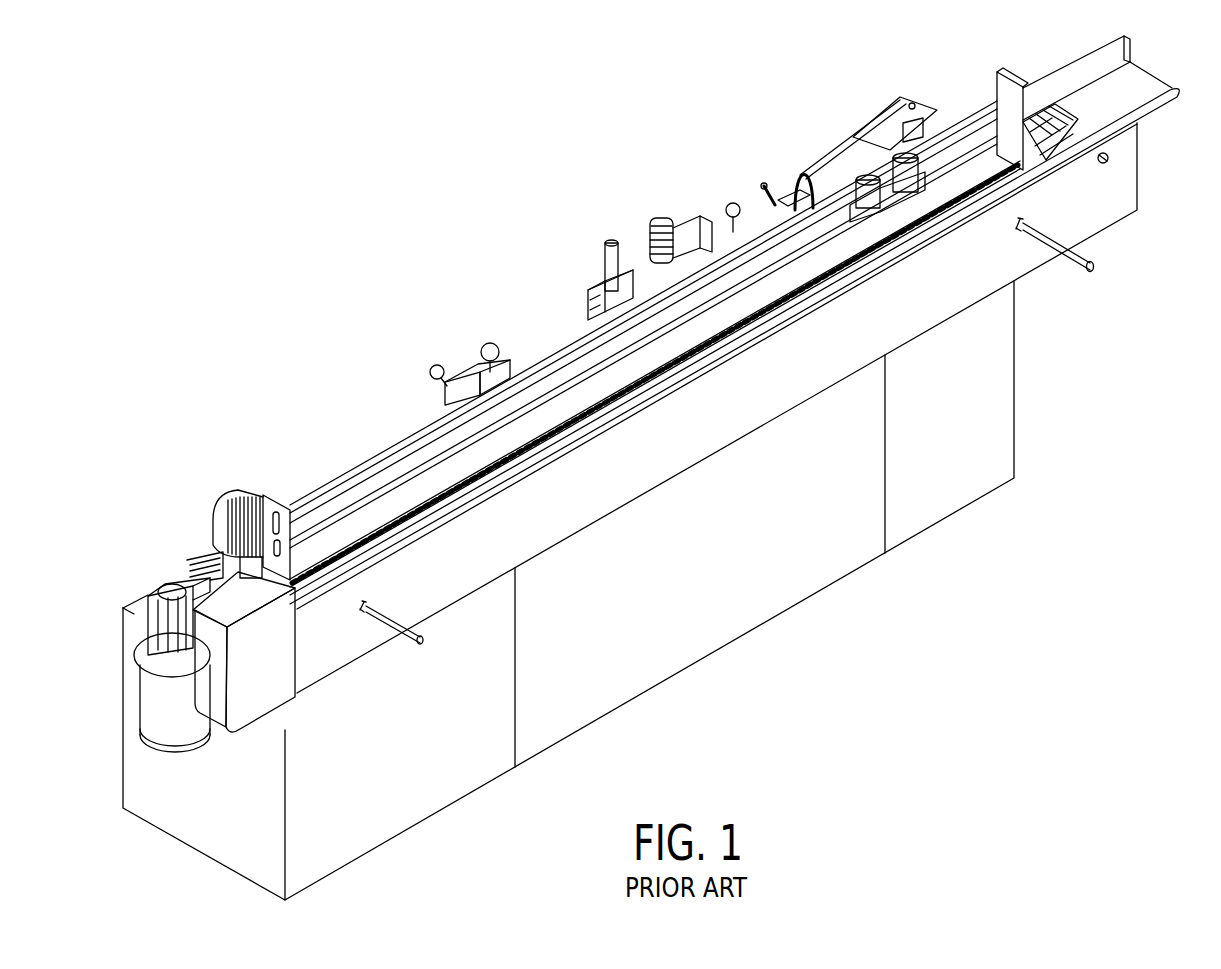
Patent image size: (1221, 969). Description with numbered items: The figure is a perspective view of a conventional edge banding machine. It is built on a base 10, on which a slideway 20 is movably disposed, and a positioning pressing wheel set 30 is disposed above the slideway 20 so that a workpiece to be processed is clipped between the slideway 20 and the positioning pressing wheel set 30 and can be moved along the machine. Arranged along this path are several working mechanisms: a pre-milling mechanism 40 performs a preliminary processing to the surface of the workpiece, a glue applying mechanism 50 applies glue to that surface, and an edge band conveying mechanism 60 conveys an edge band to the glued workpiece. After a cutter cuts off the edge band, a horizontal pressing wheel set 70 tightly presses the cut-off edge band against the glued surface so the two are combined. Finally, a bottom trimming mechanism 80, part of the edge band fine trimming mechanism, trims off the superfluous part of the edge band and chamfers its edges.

The base 10 is at (957, 629).
The slideway 20 is at (1057, 150).
The positioning pressing wheel set 30 is at (963, 142).
The pre-milling mechanism 40 is at (868, 152).
The glue applying mechanism 50 is at (756, 146).
The edge band conveying mechanism 60 is at (706, 177).
The horizontal pressing wheel set 70 is at (650, 265).
The bottom trimming mechanism 80 is at (450, 323).